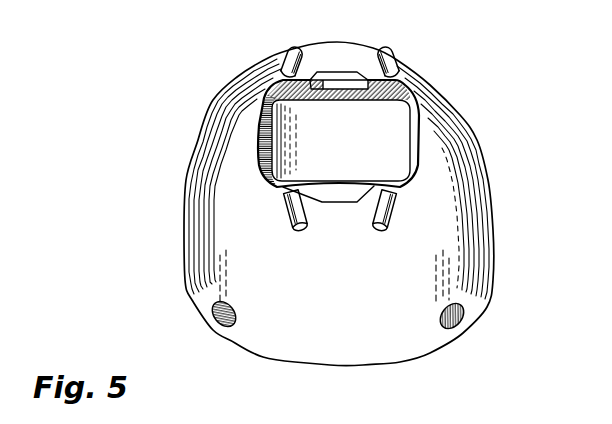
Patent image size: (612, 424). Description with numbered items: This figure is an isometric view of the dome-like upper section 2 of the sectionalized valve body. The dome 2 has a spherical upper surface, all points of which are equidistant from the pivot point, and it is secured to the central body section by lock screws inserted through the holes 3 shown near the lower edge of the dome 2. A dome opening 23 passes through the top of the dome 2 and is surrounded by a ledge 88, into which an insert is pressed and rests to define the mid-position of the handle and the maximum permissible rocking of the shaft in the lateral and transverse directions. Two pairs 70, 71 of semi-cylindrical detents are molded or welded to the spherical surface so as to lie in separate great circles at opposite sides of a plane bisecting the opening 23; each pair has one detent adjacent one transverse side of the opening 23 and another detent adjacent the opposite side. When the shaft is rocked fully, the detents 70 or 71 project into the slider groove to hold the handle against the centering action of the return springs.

The dome-like upper section 2 is at (197, 204).
The holes 3 is at (213, 302).
The dome opening 23 is at (397, 158).
The pair of semi-cylindrical detents 70 is at (290, 55).
The pair of semi-cylindrical detents 71 is at (390, 55).
The ledge 88 is at (340, 88).